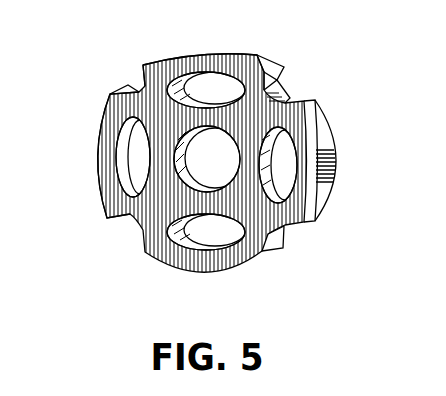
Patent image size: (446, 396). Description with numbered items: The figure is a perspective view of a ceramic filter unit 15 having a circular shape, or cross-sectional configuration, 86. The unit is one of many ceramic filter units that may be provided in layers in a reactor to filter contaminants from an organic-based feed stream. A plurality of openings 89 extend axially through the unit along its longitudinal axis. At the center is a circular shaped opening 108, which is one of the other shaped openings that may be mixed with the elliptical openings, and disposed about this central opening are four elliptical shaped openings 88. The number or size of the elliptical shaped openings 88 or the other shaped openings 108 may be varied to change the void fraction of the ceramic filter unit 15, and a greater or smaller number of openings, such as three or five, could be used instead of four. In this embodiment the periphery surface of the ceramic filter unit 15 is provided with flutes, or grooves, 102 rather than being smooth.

The ceramic filter unit 15 is at (337, 182).
The circular shape 86 is at (261, 57).
The elliptical shaped openings 88 is at (205, 78).
The openings 89 is at (207, 237).
The flutes 102 is at (143, 232).
The other shaped openings 108 is at (200, 158).